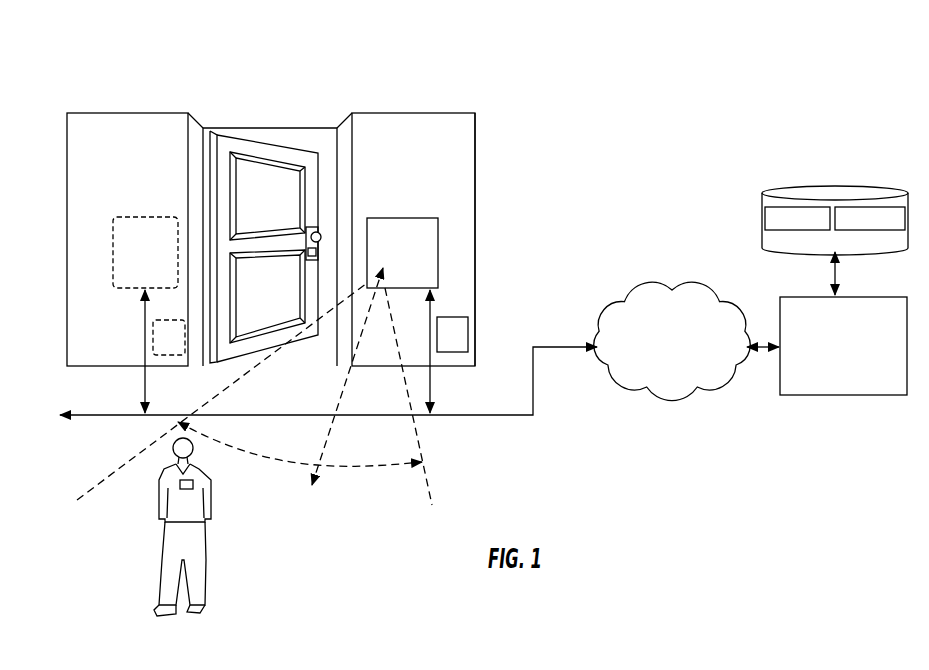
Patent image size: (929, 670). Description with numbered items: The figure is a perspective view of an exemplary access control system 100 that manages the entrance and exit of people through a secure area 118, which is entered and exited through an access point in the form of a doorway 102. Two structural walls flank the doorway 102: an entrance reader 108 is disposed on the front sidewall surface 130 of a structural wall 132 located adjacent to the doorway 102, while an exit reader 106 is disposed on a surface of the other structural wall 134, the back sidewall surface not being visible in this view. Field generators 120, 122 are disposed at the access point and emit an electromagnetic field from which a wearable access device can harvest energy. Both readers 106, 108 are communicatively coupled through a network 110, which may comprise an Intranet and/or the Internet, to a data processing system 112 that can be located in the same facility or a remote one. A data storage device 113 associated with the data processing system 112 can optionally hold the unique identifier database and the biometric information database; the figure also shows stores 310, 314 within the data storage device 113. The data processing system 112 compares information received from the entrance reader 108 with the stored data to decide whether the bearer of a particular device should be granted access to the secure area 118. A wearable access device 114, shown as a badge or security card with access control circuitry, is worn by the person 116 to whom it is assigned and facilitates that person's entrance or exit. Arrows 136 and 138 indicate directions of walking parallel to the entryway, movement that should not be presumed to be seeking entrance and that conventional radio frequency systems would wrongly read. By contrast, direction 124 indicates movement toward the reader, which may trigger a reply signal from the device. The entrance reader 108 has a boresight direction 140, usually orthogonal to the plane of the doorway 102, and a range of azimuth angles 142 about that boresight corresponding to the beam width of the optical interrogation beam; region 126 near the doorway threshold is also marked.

The access control system 100 is at (683, 101).
The doorway 102 is at (258, 218).
The exit reader 106 is at (133, 283).
The entrance reader 108 is at (391, 283).
The network 110 is at (661, 381).
The data processing system 112 is at (831, 378).
The data storage device 113 is at (835, 240).
The wearable access device 114 is at (176, 491).
The person 116 is at (188, 502).
The secure area 118 is at (321, 149).
The field generator 120 is at (157, 346).
The field generator 122 is at (440, 343).
The direction 124 is at (286, 353).
The door bottom 126 is at (290, 400).
The front sidewall surface 130 is at (401, 181).
The structural wall 132 is at (477, 162).
The structural wall 134 is at (116, 164).
The arrow 136 is at (128, 382).
The arrow 138 is at (446, 382).
The boresight direction 140 is at (254, 388).
The range of azimuth angles 142 is at (289, 465).
The data store 310 is at (785, 228).
The data store 314 is at (858, 228).